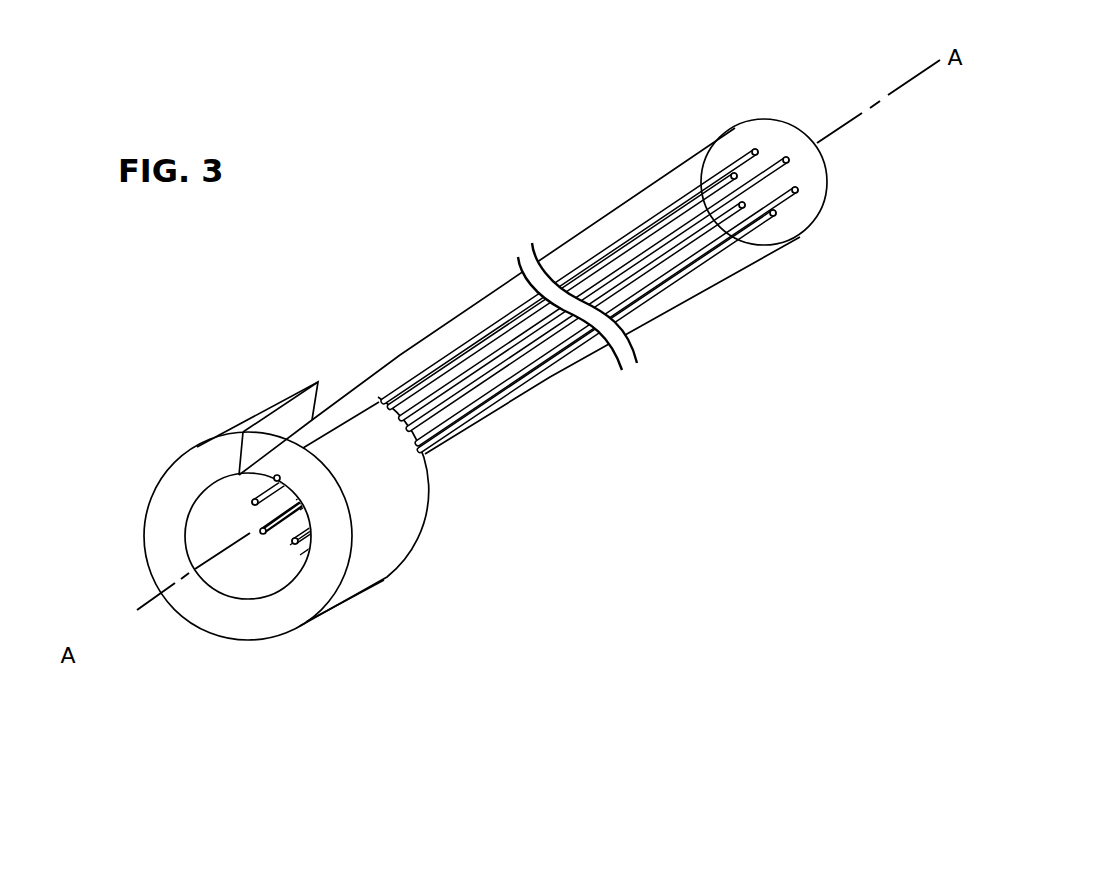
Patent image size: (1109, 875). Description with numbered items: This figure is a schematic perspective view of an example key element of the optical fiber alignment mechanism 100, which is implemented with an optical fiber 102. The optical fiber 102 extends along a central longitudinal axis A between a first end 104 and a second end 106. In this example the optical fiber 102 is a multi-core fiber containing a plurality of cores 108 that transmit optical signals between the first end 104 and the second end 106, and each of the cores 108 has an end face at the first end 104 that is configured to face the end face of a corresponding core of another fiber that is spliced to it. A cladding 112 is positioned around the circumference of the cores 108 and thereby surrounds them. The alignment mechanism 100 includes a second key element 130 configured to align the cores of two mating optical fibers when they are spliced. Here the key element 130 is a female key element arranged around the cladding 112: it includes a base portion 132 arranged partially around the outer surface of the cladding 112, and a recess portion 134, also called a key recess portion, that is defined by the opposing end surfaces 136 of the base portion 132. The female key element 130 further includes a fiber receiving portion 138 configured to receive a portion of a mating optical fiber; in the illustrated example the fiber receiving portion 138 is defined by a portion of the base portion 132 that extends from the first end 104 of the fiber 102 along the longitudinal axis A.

The optical fiber alignment mechanism 100 is at (397, 257).
The optical fiber 102 is at (495, 305).
The first end 104 is at (317, 660).
The second end 106 is at (822, 262).
The cores 108 is at (263, 531).
The cladding 112 is at (284, 567).
The key element 130 is at (200, 418).
The base portion 132 is at (161, 540).
The recess portion 134 is at (347, 405).
The end surfaces 136 is at (290, 417).
The fiber receiving portion 138 is at (223, 573).